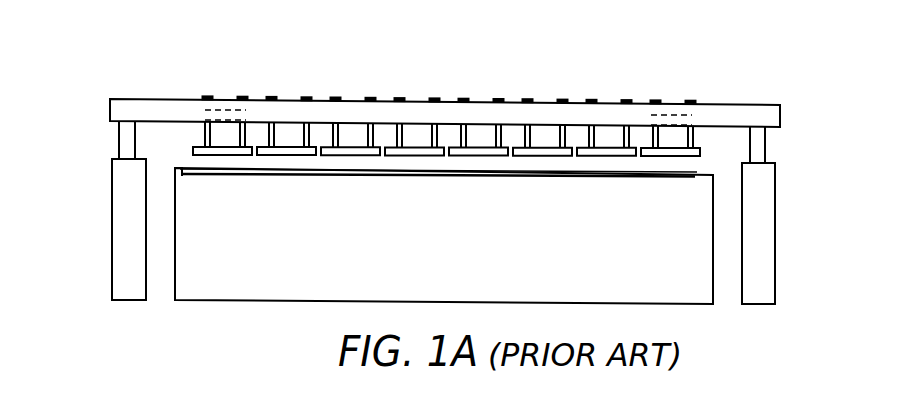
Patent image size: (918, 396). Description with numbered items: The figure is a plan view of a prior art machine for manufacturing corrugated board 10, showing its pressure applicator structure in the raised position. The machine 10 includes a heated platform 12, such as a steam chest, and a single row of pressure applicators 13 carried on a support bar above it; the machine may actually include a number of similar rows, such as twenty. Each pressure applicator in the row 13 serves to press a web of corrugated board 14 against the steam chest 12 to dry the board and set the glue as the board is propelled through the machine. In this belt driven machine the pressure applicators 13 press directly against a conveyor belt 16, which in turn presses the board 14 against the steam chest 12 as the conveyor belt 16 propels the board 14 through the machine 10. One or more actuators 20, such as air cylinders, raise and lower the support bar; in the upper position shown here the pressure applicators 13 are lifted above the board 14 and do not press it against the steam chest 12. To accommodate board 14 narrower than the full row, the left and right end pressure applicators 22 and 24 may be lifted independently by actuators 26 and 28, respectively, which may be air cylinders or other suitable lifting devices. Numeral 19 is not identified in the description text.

The machine for manufacturing corrugated board 10 is at (378, 78).
The heated platform 12 is at (444, 262).
The row of pressure applicators 13 is at (445, 79).
The web of corrugated board 14 is at (438, 208).
The conveyor belt 16 is at (222, 218).
The support leg 19 is at (749, 97).
The actuators 20 is at (440, 233).
The left end pressure applicator 22 is at (251, 58).
The right end pressure applicator 24 is at (636, 65).
The actuator 26 is at (309, 60).
The actuator 28 is at (609, 63).